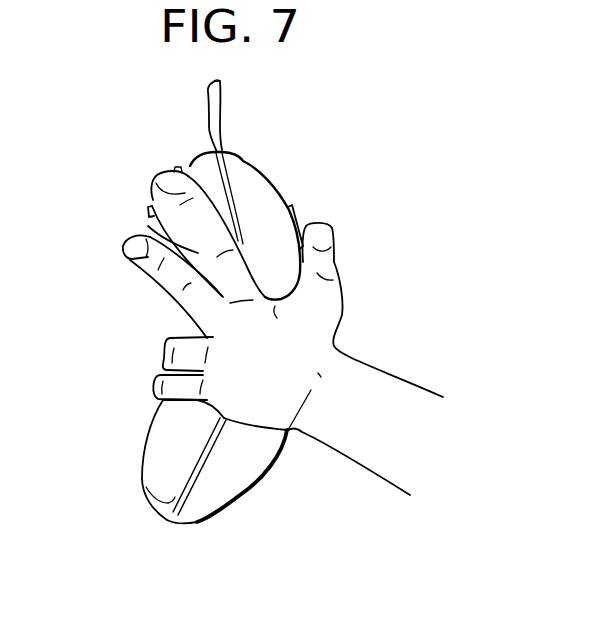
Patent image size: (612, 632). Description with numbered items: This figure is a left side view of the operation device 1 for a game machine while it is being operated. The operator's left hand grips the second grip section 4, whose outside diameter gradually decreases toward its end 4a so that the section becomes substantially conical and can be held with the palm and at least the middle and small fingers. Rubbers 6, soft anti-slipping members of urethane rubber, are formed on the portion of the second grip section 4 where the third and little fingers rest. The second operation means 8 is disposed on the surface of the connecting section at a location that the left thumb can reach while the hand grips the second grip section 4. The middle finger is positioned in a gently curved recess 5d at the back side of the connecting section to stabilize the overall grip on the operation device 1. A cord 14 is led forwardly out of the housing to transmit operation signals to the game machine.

The operation device 1 is at (270, 172).
The cord 14 is at (224, 106).
The second operation means 8 is at (297, 217).
The recesses 5d is at (150, 220).
The rubbers 6 is at (158, 455).
The second grip section 4 is at (250, 457).
The end of the grip section 4a is at (187, 511).